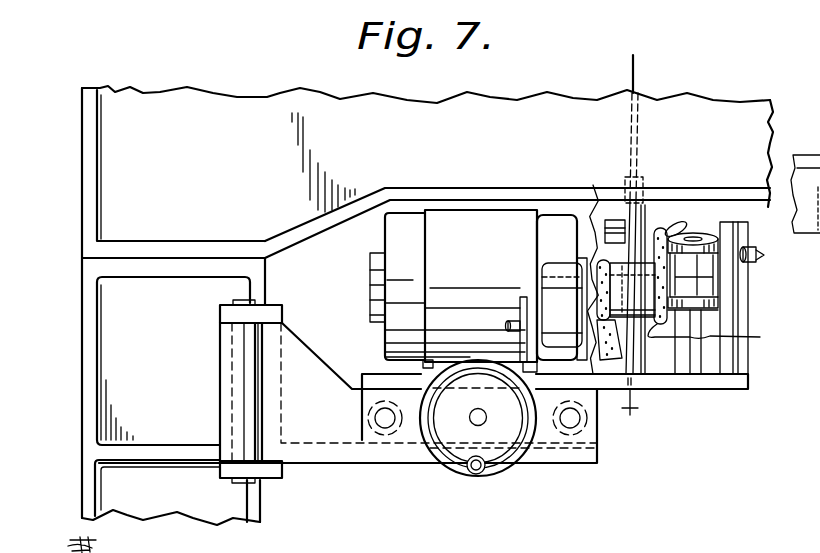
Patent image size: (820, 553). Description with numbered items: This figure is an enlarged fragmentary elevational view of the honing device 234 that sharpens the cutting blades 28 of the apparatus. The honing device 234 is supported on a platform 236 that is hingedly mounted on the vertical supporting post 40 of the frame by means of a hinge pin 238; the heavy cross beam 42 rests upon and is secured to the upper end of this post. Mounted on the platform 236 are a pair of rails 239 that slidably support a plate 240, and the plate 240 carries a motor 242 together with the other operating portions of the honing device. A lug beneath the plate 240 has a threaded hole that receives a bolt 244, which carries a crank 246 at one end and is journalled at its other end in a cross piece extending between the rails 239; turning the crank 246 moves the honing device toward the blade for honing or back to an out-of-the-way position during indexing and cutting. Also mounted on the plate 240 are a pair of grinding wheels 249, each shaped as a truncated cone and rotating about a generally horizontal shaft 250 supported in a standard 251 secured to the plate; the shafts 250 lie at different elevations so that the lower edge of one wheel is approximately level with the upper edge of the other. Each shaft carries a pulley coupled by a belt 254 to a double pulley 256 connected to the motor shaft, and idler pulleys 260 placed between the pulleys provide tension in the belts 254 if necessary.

The cutting blade 28 is at (640, 70).
The vertical supporting post 40 is at (138, 512).
The cross beam 42 is at (271, 114).
The honing device 234 is at (460, 183).
The platform 236 is at (585, 468).
The hinge pin 238 is at (228, 352).
The rails 239 is at (378, 418).
The plate 240 is at (730, 391).
The motor 242 is at (437, 263).
The bolt 244 is at (486, 426).
The crank 246 is at (466, 470).
The grinding wheel 249 is at (653, 212).
The shaft 250 is at (506, 324).
The standard 251 is at (522, 300).
The belt 254 is at (592, 200).
The double pulley 256 is at (758, 337).
The idler pulley 260 is at (543, 275).